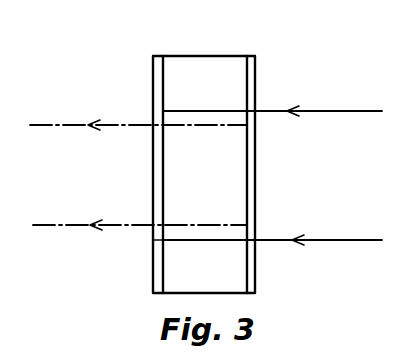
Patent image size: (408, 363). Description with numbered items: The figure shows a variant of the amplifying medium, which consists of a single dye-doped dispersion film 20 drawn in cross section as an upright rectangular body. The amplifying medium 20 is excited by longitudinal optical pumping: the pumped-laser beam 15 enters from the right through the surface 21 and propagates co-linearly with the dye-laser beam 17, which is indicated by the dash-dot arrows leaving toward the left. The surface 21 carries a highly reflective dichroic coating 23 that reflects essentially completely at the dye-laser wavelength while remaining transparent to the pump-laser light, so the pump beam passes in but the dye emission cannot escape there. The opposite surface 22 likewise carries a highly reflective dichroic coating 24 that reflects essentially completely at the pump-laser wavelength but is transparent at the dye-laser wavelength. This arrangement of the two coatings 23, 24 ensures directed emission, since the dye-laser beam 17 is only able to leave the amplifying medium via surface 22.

The pumped-laser beam 15 is at (373, 111).
The dye-laser beam 17 is at (53, 126).
The dye-doped dispersion film 20 is at (198, 73).
The surface 21 is at (253, 262).
The surface 22 is at (153, 256).
The highly reflective dichroic coating 23 is at (252, 74).
The highly reflective dichroic coating 24 is at (161, 90).